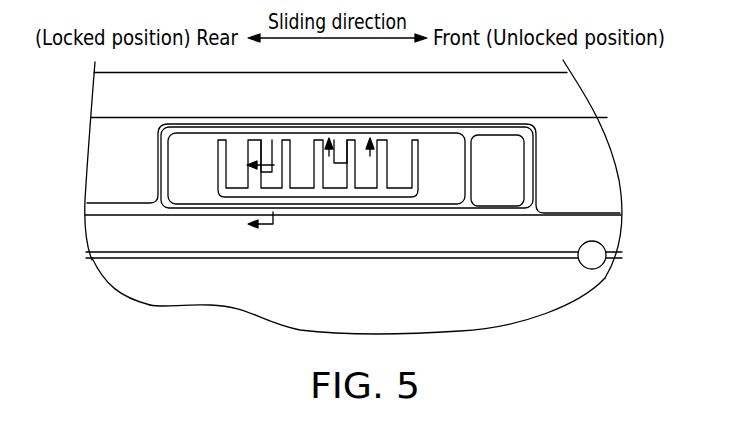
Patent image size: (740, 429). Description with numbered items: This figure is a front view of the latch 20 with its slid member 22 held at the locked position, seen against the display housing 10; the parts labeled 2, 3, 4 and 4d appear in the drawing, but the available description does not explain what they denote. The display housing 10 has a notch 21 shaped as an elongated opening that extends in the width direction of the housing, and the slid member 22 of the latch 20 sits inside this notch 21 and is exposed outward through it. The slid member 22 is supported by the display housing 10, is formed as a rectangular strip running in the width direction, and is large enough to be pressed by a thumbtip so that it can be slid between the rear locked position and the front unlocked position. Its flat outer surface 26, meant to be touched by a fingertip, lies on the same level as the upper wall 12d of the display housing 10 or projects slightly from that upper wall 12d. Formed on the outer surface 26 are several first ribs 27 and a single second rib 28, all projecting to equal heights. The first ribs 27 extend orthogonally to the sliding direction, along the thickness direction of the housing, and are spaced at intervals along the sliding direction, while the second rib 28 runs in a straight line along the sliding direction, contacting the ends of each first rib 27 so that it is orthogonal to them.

The apparatus body 2 is at (191, 291).
The cover 3 is at (601, 93).
The frame 4 is at (575, 302).
The frame portion 4d is at (123, 275).
The display housing 10 is at (95, 100).
The upper wall 12d is at (595, 167).
The latch 20 is at (440, 125).
The notch 21 is at (514, 149).
The slid member 22 is at (443, 193).
The outer surface 26 is at (180, 186).
The first ribs 27 is at (310, 152).
The second rib 28 is at (362, 190).